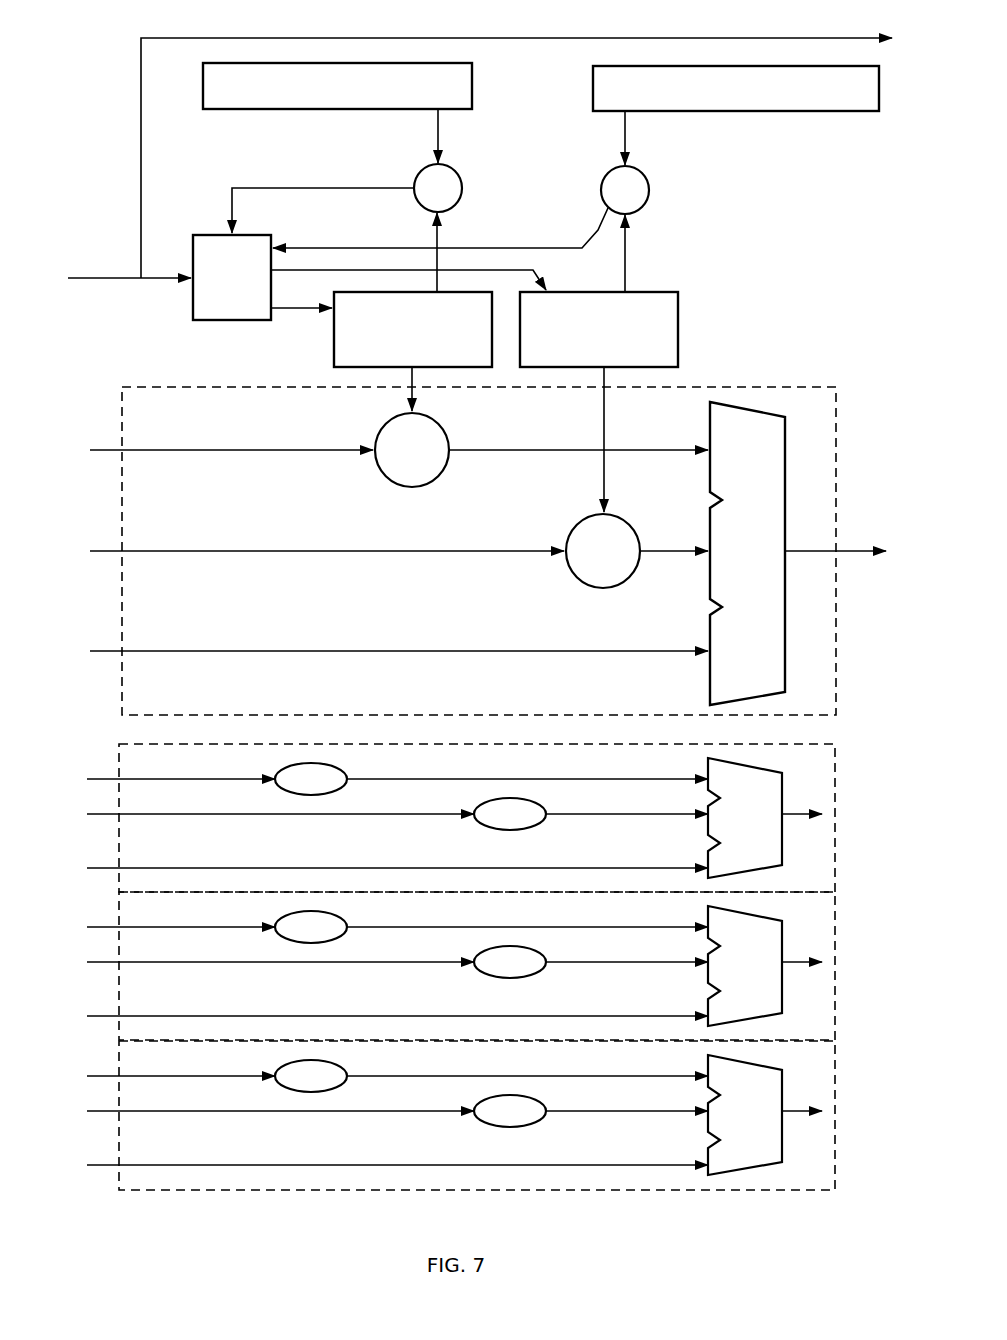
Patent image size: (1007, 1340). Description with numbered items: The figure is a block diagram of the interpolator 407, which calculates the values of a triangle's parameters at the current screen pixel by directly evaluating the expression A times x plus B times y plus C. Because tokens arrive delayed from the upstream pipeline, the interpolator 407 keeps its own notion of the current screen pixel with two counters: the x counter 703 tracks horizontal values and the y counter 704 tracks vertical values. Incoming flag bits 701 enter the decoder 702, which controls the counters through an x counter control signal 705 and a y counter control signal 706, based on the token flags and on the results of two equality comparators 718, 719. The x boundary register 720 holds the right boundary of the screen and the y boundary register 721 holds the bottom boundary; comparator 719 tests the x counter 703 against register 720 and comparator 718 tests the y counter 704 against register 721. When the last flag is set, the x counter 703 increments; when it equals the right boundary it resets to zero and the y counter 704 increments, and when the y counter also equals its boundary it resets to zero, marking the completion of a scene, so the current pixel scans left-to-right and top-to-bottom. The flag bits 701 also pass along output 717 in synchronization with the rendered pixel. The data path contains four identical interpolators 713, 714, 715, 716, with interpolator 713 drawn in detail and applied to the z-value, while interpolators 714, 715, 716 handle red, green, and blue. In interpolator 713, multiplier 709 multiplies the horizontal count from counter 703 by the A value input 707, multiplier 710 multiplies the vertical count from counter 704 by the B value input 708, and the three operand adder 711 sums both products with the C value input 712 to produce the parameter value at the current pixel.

The interpolator 407 is at (779, 310).
The flag bits 701 is at (99, 276).
The decoder 702 is at (213, 287).
The x counter 703 is at (394, 358).
The y counter 704 is at (580, 358).
The x counter control signal 705 is at (293, 312).
The y counter control signal 706 is at (537, 268).
The A value input 707 is at (107, 449).
The B value input 708 is at (107, 550).
The multiplier 709 is at (393, 448).
The multiplier 710 is at (584, 549).
The three operand adder 711 is at (728, 471).
The C value input 712 is at (107, 650).
The interpolator 713 is at (200, 421).
The interpolator 714 is at (105, 778).
The interpolator 715 is at (105, 926).
The interpolator 716 is at (105, 1075).
The output 717 is at (139, 53).
The equality comparator 718 is at (646, 176).
The equality comparator 719 is at (458, 176).
The x boundary register 720 is at (450, 98).
The y boundary register 721 is at (857, 101).